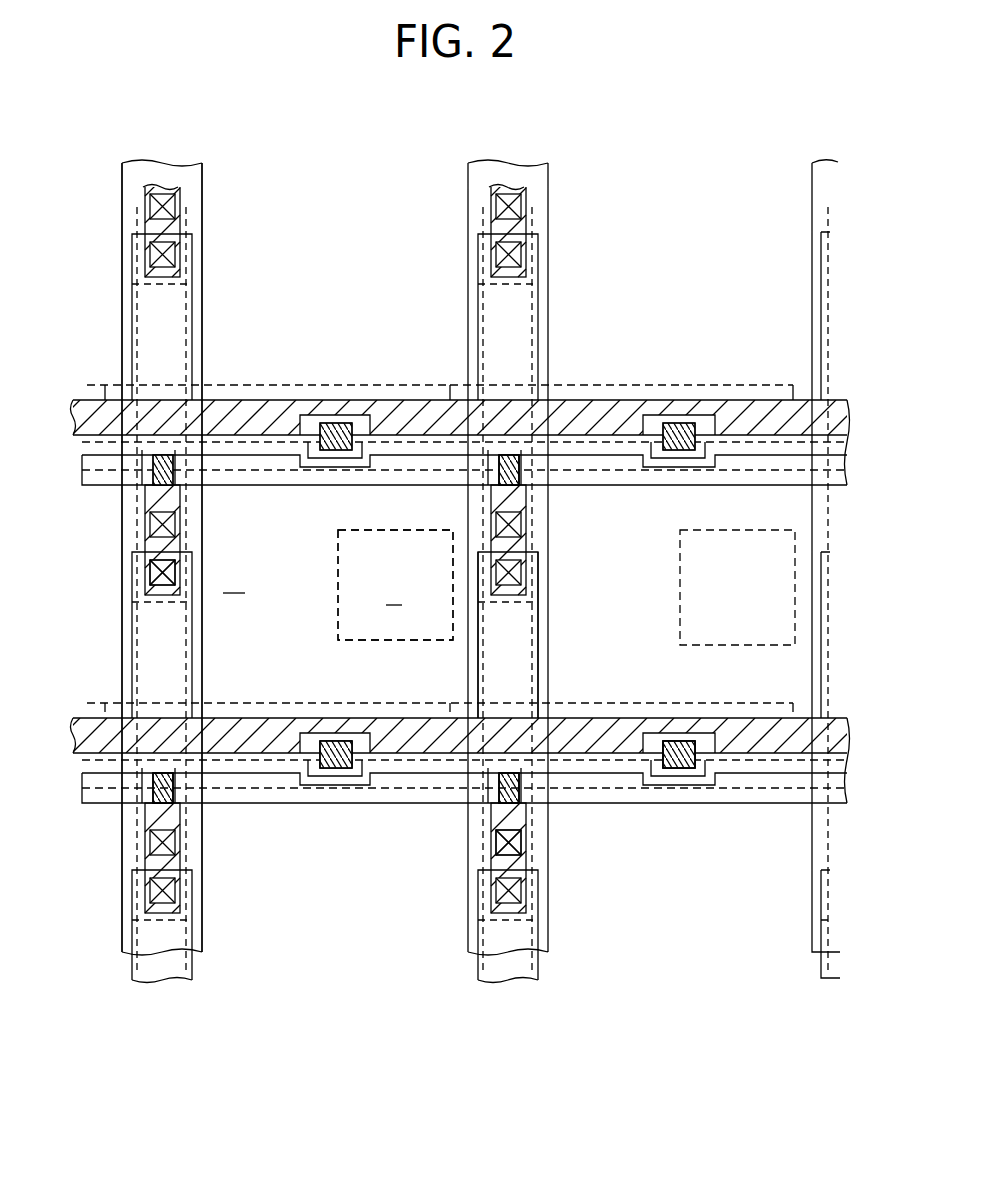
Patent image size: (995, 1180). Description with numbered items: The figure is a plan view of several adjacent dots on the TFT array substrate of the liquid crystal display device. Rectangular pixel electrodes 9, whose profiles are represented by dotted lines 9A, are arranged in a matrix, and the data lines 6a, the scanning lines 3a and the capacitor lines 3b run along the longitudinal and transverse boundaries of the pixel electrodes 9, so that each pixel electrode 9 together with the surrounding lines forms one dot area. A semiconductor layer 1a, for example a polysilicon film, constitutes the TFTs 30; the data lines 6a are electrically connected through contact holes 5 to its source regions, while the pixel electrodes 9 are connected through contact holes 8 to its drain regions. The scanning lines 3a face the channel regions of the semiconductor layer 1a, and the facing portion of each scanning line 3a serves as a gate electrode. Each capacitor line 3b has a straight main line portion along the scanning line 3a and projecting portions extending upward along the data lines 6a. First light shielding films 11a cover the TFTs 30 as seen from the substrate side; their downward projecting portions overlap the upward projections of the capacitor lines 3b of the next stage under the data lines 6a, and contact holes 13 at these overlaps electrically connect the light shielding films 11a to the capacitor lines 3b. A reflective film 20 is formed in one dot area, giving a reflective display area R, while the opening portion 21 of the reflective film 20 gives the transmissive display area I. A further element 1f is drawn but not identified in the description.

The reflective film 20 is at (232, 508).
The opening portion 21 is at (398, 530).
The pixel electrode 9 is at (454, 525).
The dotted lines 9A is at (767, 470).
The contact holes 13 is at (152, 570).
The data line 1f is at (125, 648).
The first light shielding films 11a is at (160, 718).
The data lines 6a is at (547, 518).
The capacitor lines 3b is at (325, 713).
The scanning lines 3a is at (352, 800).
The semiconductor layer 1a is at (517, 790).
The contact holes 5 is at (522, 840).
The contact holes 8 is at (673, 770).
The TFTs 30 is at (224, 863).
The reflective display area R is at (234, 579).
The transmissive region I is at (394, 591).